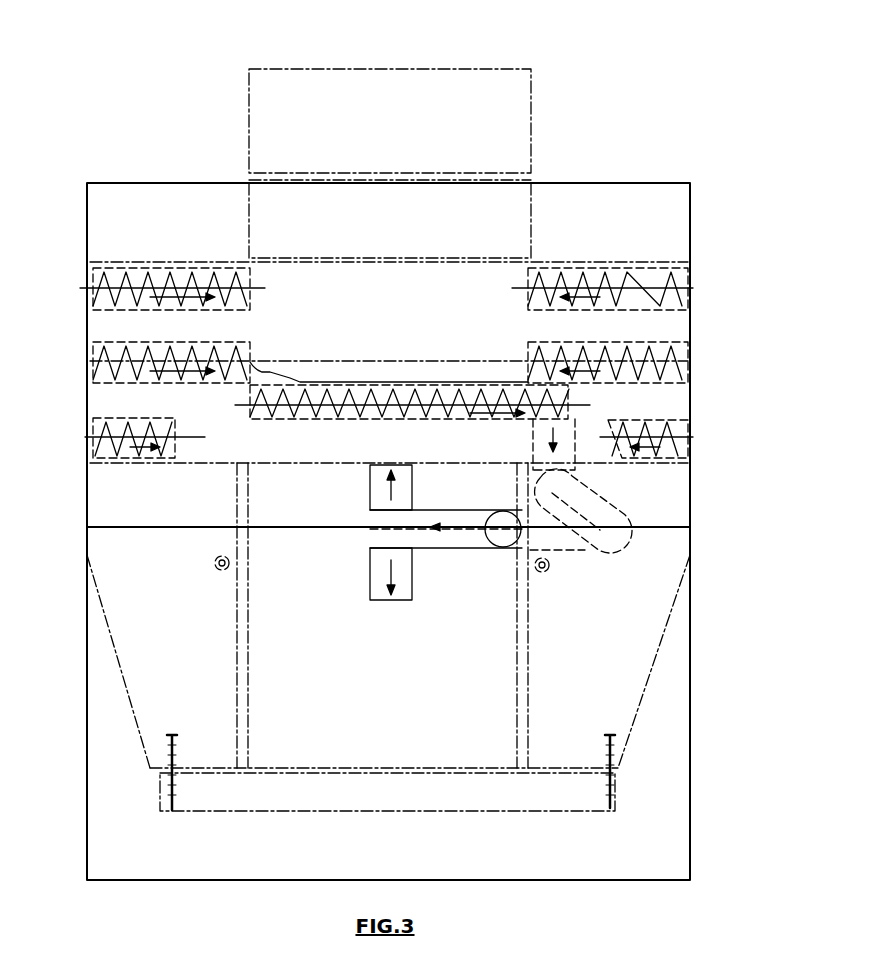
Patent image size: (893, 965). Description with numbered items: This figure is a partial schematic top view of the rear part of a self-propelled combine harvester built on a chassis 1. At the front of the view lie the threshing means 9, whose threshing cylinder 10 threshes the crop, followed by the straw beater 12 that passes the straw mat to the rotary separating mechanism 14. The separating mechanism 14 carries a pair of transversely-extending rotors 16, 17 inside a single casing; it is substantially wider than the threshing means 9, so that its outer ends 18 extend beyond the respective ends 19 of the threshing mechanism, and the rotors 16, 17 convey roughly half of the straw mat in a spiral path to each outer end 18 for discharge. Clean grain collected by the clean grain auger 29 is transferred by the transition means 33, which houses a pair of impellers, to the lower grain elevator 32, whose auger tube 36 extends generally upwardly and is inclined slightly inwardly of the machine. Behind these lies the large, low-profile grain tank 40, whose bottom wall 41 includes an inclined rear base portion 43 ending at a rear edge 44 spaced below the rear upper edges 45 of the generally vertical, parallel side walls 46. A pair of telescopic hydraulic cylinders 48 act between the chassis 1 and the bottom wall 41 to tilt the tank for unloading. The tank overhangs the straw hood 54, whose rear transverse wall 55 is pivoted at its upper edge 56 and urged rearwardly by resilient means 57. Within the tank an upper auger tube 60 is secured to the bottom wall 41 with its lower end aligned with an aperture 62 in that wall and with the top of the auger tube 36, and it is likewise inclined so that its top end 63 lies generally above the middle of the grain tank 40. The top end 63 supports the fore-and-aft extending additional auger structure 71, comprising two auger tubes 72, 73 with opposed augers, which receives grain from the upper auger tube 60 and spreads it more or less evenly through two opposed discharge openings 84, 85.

The chassis 1 is at (237, 652).
The threshing means 9 is at (534, 60).
The threshing cylinder 10 is at (535, 140).
The straw beater 12 is at (535, 206).
The rotary separating mechanism 14 is at (134, 236).
The rotor 16 is at (600, 262).
The rotor 17 is at (184, 463).
The outer ends of the separator mechanism 18 is at (90, 418).
The ends of the threshing mechanism 19 is at (249, 140).
The clean grain auger 29 is at (304, 430).
The lower grain elevator 32 is at (565, 552).
The transition means 33 is at (640, 512).
The auger tube 36 is at (588, 552).
The grain tank 40 is at (87, 772).
The bottom wall 41 is at (184, 218).
The rear base portion 43 is at (235, 855).
The rear edge of the bottom wall 44 is at (192, 880).
The rear upper edges of the side walls 45 is at (87, 712).
The side walls 46 is at (87, 672).
The telescopic hydraulic cylinders 48 is at (222, 570).
The straw hood 54 is at (645, 738).
The rear transverse wall 55 is at (395, 811).
The upper edge 56 is at (372, 768).
The resilient means 57 is at (172, 808).
The upper auger tube 60 is at (432, 548).
The aperture 62 is at (522, 548).
The top end of the upper auger tube 63 is at (370, 535).
The additional auger structure 71 is at (368, 556).
The auger tube 72 is at (370, 478).
The auger tube 73 is at (412, 596).
The discharge opening 84 is at (378, 465).
The discharge opening 85 is at (400, 600).